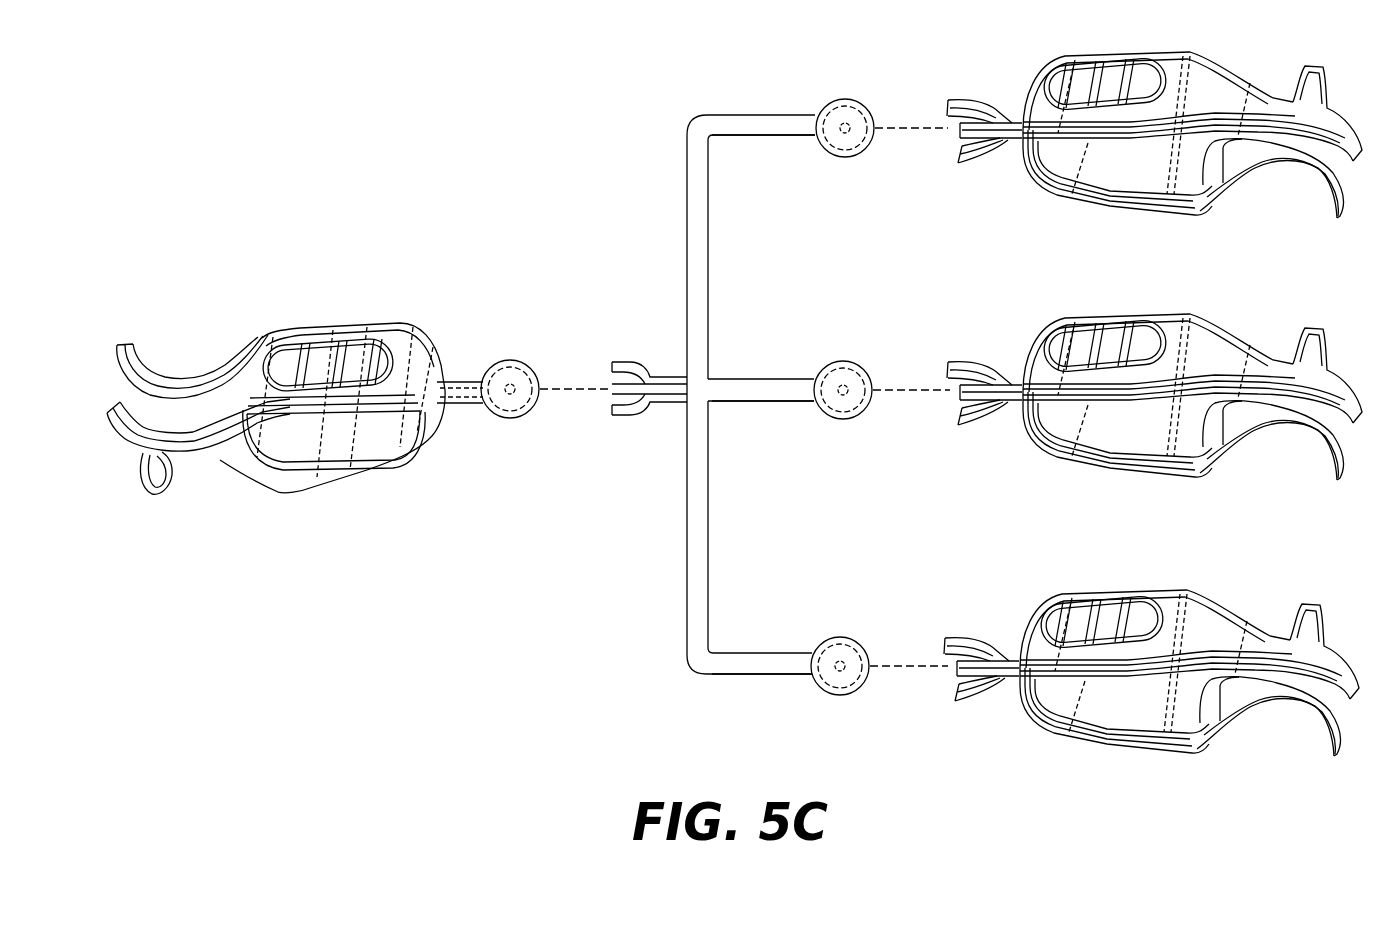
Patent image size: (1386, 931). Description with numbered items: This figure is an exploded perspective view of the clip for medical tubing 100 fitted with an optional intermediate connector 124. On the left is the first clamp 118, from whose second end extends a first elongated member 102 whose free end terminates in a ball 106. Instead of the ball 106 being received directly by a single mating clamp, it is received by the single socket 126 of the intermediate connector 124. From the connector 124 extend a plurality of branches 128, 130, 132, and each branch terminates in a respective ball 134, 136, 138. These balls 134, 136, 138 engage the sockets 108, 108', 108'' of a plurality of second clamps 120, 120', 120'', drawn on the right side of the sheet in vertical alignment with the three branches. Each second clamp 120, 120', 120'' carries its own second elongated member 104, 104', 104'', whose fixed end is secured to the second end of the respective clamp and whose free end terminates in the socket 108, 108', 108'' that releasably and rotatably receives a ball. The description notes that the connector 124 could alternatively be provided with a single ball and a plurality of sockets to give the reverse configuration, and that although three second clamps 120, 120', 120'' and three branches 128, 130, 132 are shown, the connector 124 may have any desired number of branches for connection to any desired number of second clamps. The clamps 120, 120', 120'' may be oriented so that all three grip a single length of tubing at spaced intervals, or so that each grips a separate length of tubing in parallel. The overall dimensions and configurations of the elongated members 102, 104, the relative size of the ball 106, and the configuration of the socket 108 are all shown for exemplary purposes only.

The clip for medical tubing 100 is at (536, 544).
The first elongated member 102 is at (465, 407).
The second elongated member 104 is at (1168, 392).
The second elongated member 104' is at (1168, 126).
The second elongated member 104'' is at (1164, 668).
The ball 106 is at (523, 360).
The socket 108 is at (973, 362).
The socket 108' is at (972, 97).
The socket 108'' is at (969, 639).
The first clamp 118 is at (357, 473).
The second clamp 120 is at (1272, 466).
The second clamp 120' is at (1272, 202).
The second clamp 120'' is at (1269, 742).
The intermediate connector 124 is at (690, 622).
The single socket 126 is at (630, 358).
The branch 128 is at (722, 402).
The branch 130 is at (722, 137).
The branch 132 is at (717, 675).
The ball 134 is at (843, 360).
The ball 136 is at (845, 98).
The ball 138 is at (843, 636).